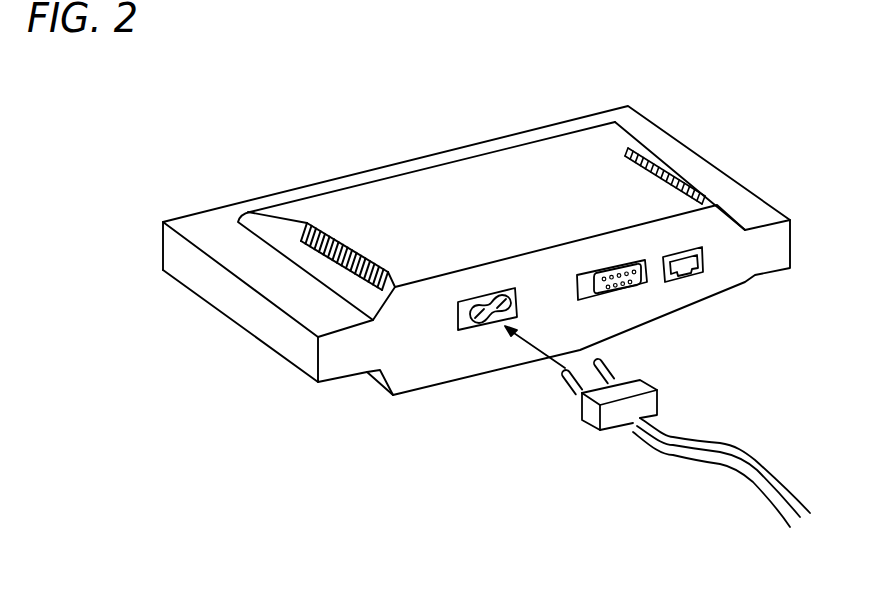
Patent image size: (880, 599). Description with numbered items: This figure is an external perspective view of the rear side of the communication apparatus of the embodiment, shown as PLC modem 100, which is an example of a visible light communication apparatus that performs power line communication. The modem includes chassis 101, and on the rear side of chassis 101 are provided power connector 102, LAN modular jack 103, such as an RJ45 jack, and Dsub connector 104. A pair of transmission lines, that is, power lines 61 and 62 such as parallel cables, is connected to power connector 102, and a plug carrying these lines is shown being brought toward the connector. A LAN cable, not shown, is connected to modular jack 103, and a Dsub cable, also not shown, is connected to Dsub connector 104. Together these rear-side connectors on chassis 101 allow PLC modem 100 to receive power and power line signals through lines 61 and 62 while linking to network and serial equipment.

The PLC modem 100 is at (475, 122).
The chassis 101 is at (300, 186).
The power connector 102 is at (482, 318).
The LAN modular jack 103 is at (687, 273).
The Dsub connector 104 is at (623, 292).
The transmission line 61 is at (757, 458).
The transmission line 62 is at (737, 470).